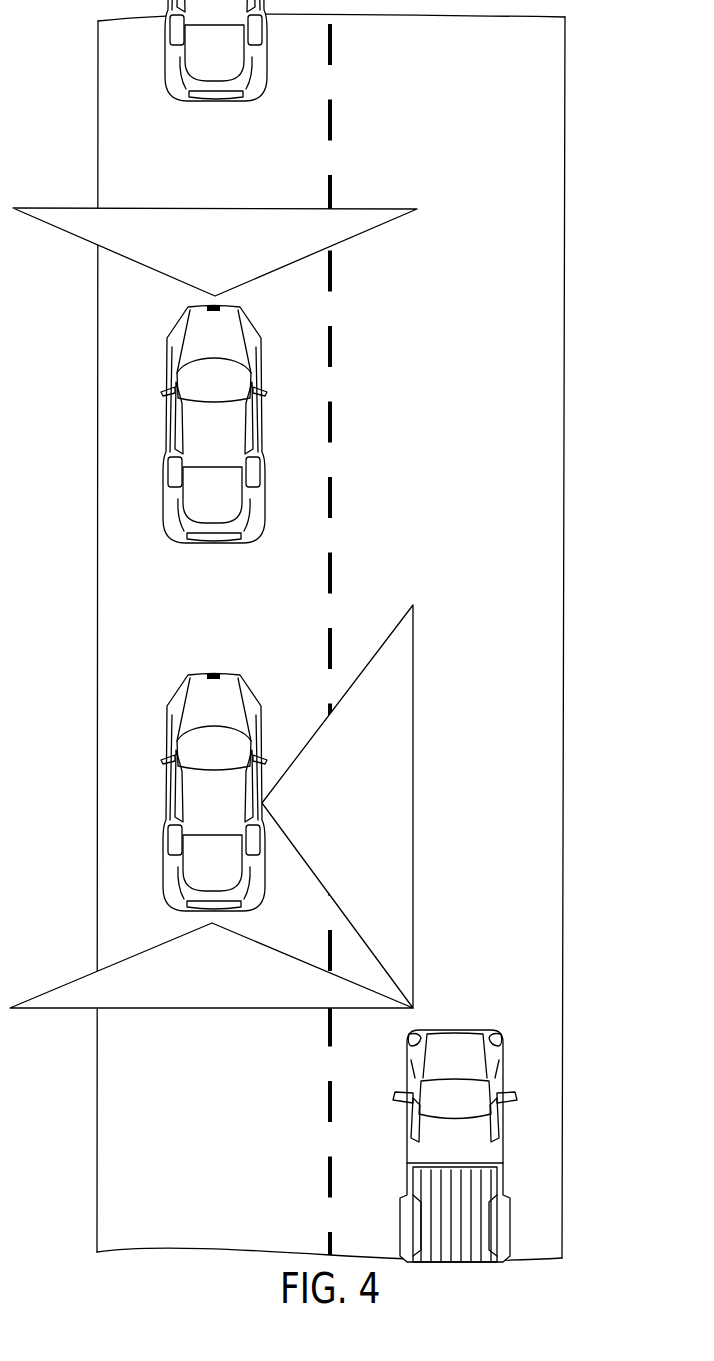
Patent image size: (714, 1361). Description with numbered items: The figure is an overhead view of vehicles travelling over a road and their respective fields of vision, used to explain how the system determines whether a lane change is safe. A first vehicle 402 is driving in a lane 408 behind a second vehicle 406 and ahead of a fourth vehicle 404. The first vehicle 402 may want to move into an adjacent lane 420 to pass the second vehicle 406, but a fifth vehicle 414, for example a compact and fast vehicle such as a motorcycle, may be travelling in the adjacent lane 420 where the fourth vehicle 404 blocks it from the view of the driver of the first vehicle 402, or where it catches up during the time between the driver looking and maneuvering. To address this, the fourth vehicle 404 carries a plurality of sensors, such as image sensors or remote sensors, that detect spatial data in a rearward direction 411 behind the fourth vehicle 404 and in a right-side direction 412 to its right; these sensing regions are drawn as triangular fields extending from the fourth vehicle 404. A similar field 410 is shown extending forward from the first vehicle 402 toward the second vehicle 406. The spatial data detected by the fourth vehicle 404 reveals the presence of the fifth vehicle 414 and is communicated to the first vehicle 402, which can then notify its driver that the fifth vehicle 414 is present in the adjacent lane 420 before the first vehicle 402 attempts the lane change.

The first vehicle 402 is at (263, 428).
The fourth vehicle 404 is at (165, 795).
The second vehicle 406 is at (265, 64).
The lane 408 is at (141, 135).
The forward sensor field of view 410 is at (350, 238).
The rearward direction 411 is at (158, 1012).
The right-side direction 412 is at (413, 746).
The fifth vehicle 414 is at (503, 1073).
The adjacent lane 420 is at (496, 255).